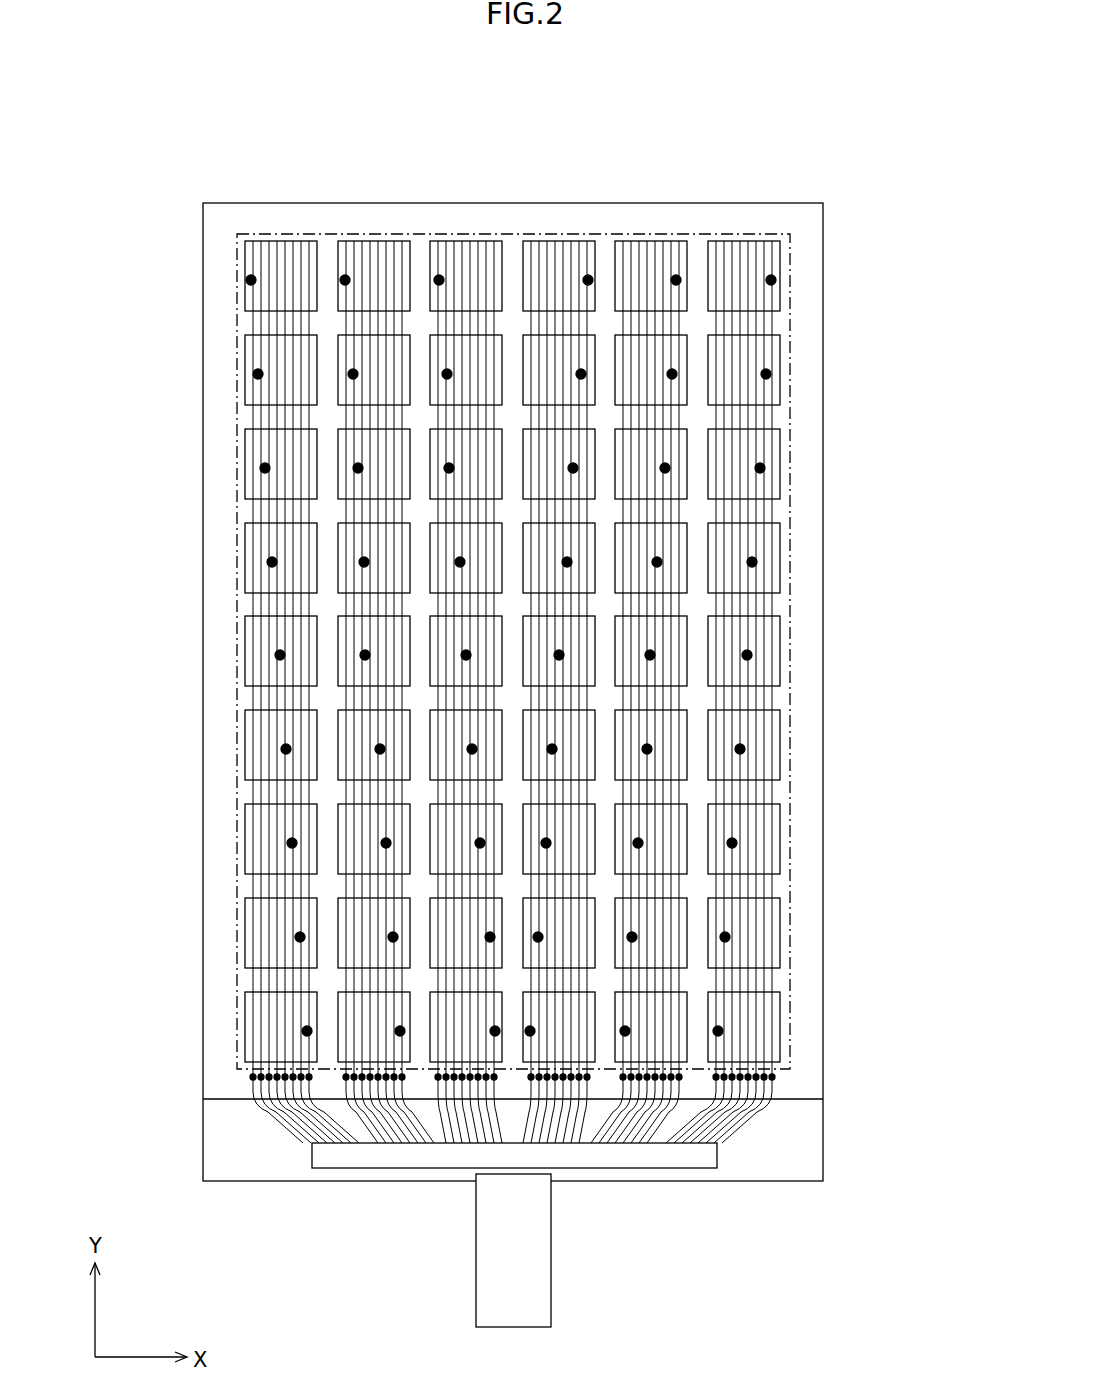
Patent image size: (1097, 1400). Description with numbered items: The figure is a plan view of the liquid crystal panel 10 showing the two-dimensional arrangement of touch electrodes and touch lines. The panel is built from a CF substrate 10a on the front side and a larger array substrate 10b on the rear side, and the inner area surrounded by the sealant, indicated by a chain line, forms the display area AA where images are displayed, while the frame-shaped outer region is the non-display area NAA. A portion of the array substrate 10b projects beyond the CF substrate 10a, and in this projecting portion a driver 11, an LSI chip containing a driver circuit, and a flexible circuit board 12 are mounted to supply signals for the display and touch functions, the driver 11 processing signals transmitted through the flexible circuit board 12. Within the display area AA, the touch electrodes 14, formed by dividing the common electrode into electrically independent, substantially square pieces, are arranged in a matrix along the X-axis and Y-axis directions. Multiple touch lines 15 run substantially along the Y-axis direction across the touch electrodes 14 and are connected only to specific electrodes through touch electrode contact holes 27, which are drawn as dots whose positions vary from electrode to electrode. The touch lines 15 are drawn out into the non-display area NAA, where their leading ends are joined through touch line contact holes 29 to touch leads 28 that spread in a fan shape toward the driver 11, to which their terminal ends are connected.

The liquid crystal panel 10 is at (190, 1186).
The CF substrate 10a is at (225, 1101).
The array substrate 10b is at (738, 1183).
The driver 11 is at (410, 1157).
The flexible circuit board 12 is at (551, 1285).
The touch electrode 14 is at (540, 241).
The touch line 15 is at (450, 272).
The touch electrode contact hole 27 is at (439, 280).
The touch lead 28 is at (310, 1115).
The touch line contact hole 29 is at (262, 1080).
The display area AA is at (322, 232).
The non-display area NAA is at (276, 1155).